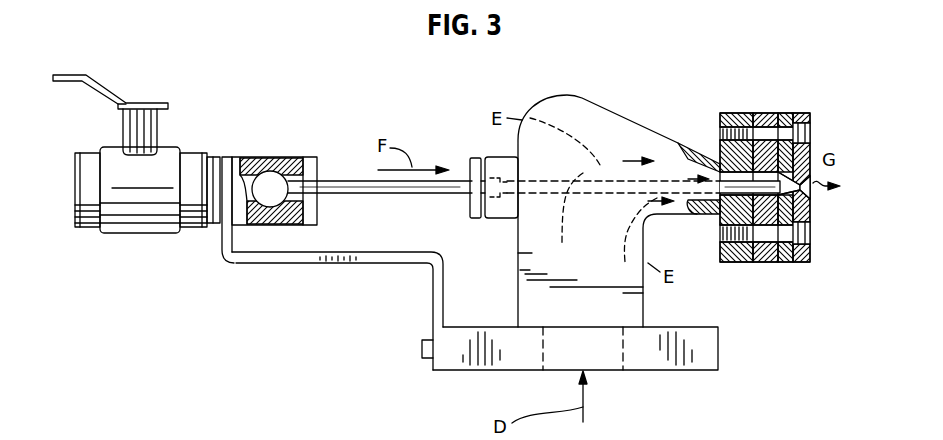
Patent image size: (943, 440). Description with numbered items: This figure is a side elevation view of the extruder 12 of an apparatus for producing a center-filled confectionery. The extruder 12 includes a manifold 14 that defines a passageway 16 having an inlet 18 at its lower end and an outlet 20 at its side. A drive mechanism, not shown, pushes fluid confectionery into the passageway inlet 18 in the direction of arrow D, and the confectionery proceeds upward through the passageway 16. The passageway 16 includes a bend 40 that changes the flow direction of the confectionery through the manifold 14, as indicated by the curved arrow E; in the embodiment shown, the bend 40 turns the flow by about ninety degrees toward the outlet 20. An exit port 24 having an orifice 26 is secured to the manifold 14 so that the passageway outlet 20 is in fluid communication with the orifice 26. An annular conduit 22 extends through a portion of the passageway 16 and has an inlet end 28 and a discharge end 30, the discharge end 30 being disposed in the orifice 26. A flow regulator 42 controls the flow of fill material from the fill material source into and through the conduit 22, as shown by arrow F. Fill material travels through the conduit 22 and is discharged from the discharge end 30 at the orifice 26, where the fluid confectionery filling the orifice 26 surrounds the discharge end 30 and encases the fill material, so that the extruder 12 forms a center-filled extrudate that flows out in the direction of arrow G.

The extruder 12 is at (514, 86).
The manifold 14 is at (518, 255).
The passageway 16 is at (548, 315).
The inlet 18 is at (556, 375).
The outlet 20 is at (706, 143).
The annular conduit 22 is at (368, 195).
The exit port 24 is at (793, 112).
The orifice 26 is at (790, 190).
The inlet end 28 is at (288, 158).
The discharge end 30 is at (792, 177).
The bend 40 is at (555, 88).
The flow regulator 42 is at (157, 224).